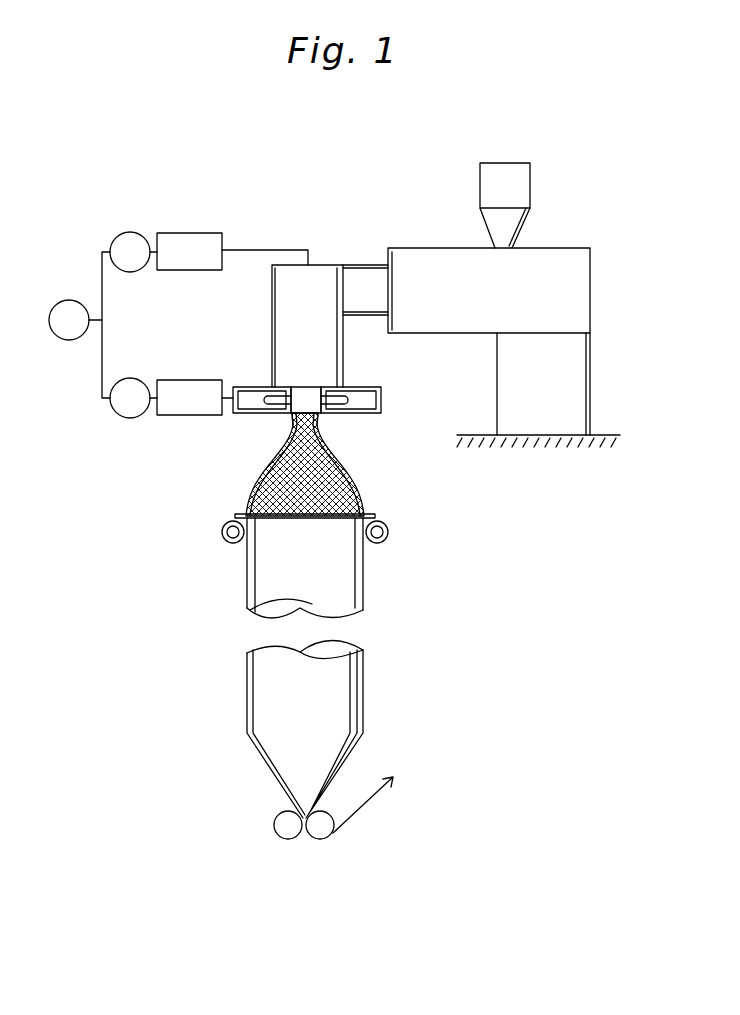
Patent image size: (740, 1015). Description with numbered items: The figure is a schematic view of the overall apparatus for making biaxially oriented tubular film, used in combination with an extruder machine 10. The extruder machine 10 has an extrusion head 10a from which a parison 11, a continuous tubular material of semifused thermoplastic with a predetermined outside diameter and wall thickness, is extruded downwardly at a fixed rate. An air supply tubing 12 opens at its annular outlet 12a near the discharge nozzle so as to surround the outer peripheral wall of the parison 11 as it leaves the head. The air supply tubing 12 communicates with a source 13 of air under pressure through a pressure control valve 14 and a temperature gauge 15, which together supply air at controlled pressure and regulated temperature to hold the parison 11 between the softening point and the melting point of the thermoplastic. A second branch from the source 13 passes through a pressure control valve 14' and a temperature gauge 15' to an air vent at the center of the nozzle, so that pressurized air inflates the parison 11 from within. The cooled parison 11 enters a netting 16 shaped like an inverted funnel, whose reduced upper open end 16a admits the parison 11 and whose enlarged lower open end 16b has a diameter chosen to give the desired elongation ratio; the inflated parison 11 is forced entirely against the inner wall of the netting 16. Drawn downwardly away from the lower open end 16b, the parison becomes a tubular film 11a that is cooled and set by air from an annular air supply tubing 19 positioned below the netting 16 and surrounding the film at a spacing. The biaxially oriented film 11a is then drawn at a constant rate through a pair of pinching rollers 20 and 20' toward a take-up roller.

The extruder machine 10 is at (423, 238).
The extrusion head 10a is at (282, 300).
The parison 11 is at (302, 386).
The tubular film 11a is at (365, 575).
The air supply tubing 12 is at (250, 386).
The annular outlet 12a is at (340, 414).
The source of air under pressure 13 is at (69, 298).
The pressure control valve 14 is at (142, 232).
The pressure control valve 14' is at (145, 377).
The temperature gauge 15 is at (198, 231).
The temperature gauge 15' is at (190, 376).
The netting 16 is at (265, 472).
The upper open end 16a is at (287, 422).
The lower open end 16b is at (238, 511).
The annular air supply tubing 19 is at (222, 533).
The pinching roller 20 is at (283, 851).
The pinching roller 20' is at (340, 843).